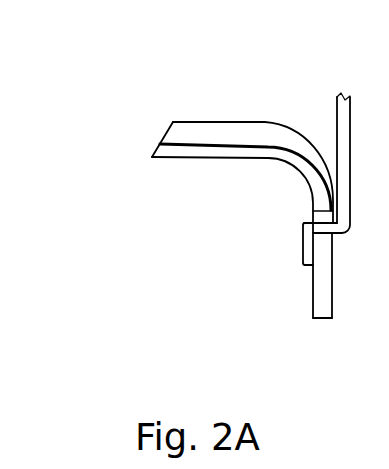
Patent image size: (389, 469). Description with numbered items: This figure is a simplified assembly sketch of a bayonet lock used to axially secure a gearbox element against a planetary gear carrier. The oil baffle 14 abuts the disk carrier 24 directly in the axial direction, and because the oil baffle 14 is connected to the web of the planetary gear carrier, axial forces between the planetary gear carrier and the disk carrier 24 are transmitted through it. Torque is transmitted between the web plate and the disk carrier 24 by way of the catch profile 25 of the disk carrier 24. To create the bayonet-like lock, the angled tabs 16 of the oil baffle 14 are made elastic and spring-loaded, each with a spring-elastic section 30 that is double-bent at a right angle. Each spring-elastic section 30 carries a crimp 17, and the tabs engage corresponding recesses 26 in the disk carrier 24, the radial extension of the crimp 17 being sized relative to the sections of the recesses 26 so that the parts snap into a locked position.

The oil baffle 14 is at (342, 122).
The disk carrier 24 is at (166, 140).
The angled tab 16 is at (302, 225).
The spring-elastic section 30 is at (292, 237).
The crimp 17 is at (310, 248).
The recess 26 is at (325, 240).
The catch profile 25 is at (323, 307).